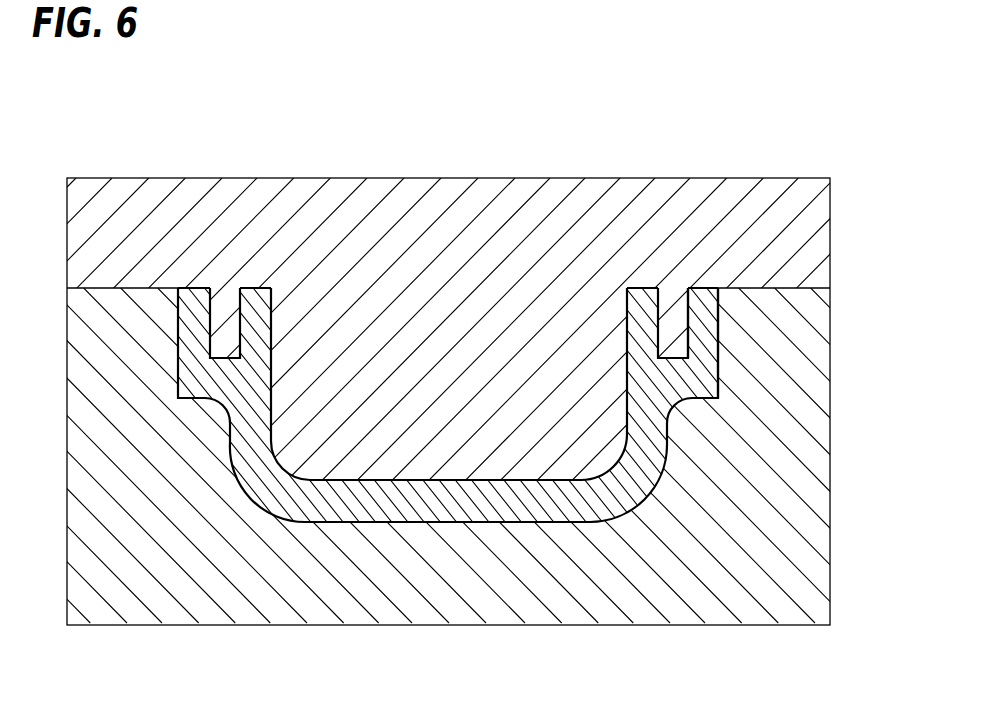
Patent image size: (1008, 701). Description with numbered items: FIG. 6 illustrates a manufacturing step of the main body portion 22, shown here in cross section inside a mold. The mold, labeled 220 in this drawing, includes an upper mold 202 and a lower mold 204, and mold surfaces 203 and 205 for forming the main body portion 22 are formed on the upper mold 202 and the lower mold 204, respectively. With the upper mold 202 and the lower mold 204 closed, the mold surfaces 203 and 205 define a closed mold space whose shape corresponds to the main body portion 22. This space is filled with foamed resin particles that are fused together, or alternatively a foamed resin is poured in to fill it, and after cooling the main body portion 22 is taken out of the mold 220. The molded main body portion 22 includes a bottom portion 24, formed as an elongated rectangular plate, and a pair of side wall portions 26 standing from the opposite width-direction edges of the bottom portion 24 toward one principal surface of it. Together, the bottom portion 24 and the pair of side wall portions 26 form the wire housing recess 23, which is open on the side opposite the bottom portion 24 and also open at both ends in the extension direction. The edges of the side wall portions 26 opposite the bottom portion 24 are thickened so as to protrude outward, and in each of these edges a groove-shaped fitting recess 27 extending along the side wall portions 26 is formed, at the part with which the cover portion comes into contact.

The mold 220 is at (748, 173).
The upper mold 202 is at (831, 212).
The lower mold 204 is at (215, 627).
The mold surface 203 is at (392, 490).
The mold surface 205 is at (372, 512).
The main body portion 22 is at (667, 453).
The wire housing recess 23 is at (517, 476).
The bottom portion 24 is at (579, 525).
The side wall portions 26 is at (720, 338).
The fitting recess 27 is at (680, 334).